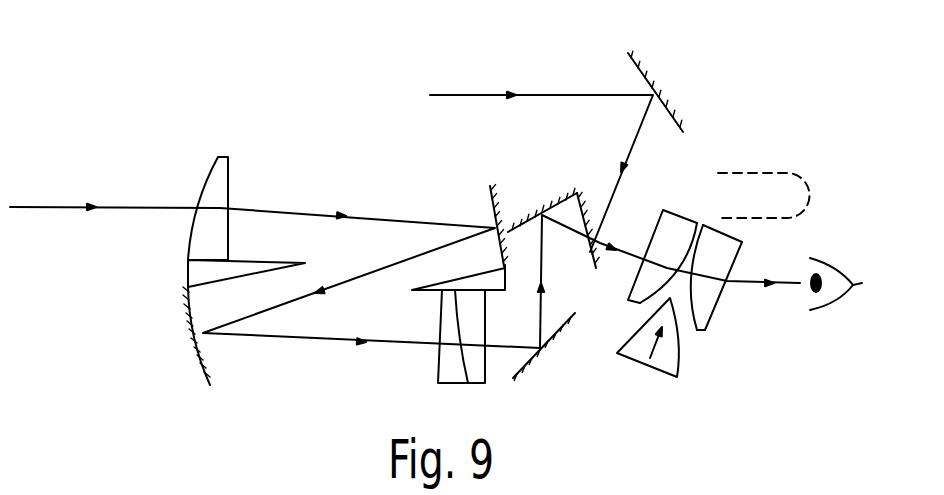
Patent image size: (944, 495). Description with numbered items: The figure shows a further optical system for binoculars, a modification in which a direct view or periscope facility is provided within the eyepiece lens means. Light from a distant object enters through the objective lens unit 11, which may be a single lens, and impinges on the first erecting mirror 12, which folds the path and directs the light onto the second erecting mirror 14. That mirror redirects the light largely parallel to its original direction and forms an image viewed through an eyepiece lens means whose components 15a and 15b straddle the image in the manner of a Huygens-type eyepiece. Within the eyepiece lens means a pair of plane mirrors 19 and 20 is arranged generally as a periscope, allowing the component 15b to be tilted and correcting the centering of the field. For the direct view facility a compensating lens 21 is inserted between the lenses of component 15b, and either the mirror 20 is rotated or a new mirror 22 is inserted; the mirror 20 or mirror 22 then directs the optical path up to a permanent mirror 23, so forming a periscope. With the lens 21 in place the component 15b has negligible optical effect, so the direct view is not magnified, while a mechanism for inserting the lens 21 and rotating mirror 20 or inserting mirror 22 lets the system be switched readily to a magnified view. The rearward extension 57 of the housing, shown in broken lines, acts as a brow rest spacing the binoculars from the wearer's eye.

The objective lens unit 11 is at (220, 170).
The first erecting mirror 12 is at (497, 190).
The second erecting mirror 14 is at (205, 368).
The component of the eyepiece lens means 15a is at (470, 385).
The component of the eyepiece lens means 15b is at (707, 308).
The plane mirror 19 is at (543, 356).
The plane mirror 20 is at (557, 192).
The compensating lens 21 is at (665, 362).
The mirror 22 is at (600, 268).
The permanent mirror 23 is at (658, 78).
The rearward extension 57 is at (790, 174).